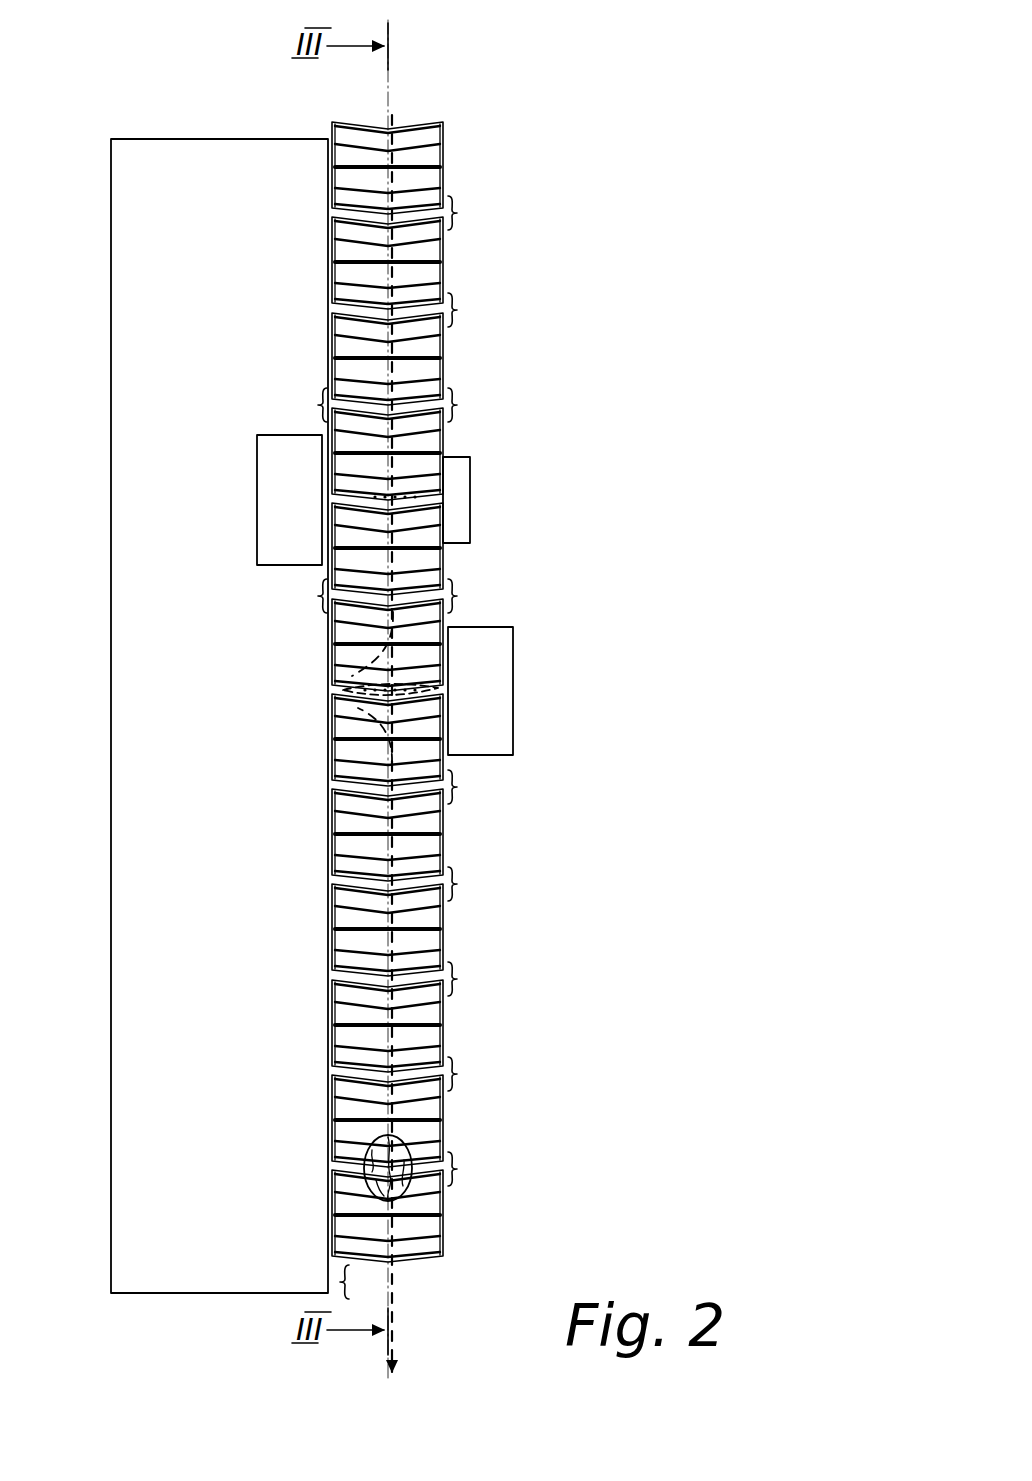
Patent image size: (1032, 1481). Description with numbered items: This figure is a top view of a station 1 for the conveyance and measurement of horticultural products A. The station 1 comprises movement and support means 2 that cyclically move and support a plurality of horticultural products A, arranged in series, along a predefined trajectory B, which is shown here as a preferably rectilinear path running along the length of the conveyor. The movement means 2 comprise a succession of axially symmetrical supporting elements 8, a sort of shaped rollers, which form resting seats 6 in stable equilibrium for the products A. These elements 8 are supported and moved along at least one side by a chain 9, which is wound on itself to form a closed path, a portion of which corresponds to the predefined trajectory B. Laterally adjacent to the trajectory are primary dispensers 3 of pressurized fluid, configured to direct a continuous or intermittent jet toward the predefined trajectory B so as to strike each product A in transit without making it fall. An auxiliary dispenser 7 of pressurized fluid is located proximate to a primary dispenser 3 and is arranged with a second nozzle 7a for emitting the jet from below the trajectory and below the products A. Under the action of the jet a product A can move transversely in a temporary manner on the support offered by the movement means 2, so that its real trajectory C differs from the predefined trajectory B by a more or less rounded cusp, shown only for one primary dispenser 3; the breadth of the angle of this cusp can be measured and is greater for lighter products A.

The station for the conveyance and measurement of horticultural products 1 is at (556, 117).
The movement and support means 2 is at (471, 310).
The primary dispenser of pressurized fluid 3 is at (251, 449).
The resting seats 6 is at (412, 403).
The auxiliary dispenser of pressurized fluid 7 is at (474, 486).
The second nozzle 7a is at (405, 505).
The supporting elements 8 is at (403, 175).
The chain 9 is at (166, 1266).
The horticultural products A is at (412, 1175).
The predefined trajectory B is at (395, 1296).
The real trajectory C is at (355, 708).